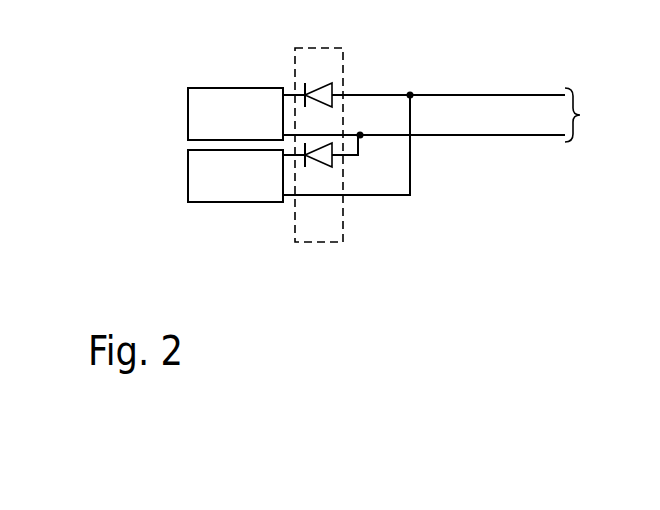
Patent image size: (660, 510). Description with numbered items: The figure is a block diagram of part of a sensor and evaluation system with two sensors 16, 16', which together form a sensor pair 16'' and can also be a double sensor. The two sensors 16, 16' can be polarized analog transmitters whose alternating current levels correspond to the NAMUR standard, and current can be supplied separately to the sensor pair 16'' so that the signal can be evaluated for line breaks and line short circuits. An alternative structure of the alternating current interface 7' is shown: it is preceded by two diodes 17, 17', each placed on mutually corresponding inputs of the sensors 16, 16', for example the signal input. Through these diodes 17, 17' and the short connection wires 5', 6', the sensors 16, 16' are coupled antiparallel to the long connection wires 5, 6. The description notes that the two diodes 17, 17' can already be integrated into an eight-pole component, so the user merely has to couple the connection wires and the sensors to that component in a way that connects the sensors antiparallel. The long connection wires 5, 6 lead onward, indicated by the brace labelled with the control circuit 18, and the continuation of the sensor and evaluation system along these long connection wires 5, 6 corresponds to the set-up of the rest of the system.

The connection wire 5 is at (448, 57).
The connection wire 6 is at (424, 175).
The connection wire 5' is at (372, 107).
The connection wire 6' is at (368, 87).
The alternating current or alternating voltage interface 7' is at (347, 177).
The sensor 16 is at (235, 114).
The sensor 16' is at (235, 176).
The sensor pair 16'' is at (187, 177).
The diode 17 is at (307, 54).
The diode 17' is at (304, 223).
The control circuit 18 is at (593, 124).